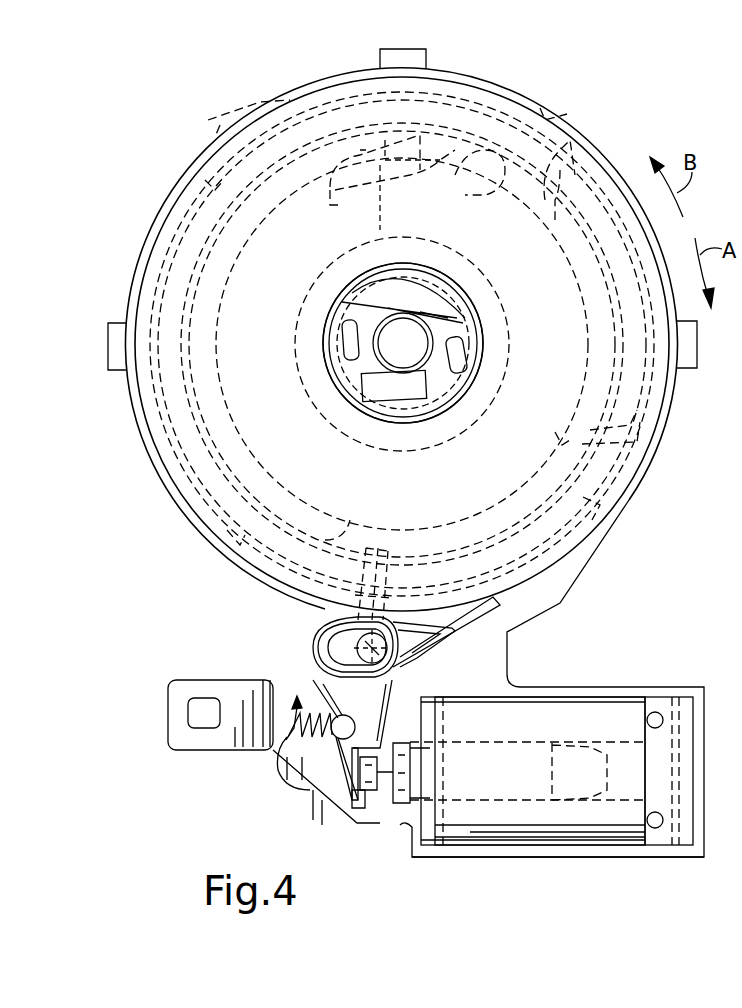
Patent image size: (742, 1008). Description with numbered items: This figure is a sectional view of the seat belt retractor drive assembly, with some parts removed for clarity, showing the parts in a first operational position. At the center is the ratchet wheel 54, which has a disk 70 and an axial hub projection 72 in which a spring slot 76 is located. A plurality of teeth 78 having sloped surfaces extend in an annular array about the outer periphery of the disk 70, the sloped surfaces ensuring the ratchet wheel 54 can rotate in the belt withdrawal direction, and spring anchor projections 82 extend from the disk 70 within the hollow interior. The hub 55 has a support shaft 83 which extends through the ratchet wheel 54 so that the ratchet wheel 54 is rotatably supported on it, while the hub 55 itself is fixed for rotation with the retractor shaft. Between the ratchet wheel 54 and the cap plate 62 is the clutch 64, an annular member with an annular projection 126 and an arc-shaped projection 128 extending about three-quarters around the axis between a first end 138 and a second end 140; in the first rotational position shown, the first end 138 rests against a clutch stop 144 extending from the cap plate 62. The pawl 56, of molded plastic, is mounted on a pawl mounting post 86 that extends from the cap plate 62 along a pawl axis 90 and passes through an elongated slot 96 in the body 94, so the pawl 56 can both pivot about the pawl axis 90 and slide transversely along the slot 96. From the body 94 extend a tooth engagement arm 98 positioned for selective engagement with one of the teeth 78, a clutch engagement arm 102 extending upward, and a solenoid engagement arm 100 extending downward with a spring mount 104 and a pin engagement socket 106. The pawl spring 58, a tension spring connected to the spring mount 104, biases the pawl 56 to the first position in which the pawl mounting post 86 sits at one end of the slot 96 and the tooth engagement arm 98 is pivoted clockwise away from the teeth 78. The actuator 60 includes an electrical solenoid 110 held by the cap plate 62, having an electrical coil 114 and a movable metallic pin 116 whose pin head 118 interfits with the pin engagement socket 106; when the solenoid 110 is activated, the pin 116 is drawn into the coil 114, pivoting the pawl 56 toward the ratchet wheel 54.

The ratchet wheel 54 is at (620, 508).
The disk 70 is at (653, 397).
The clutch 64 is at (600, 228).
The teeth 78 is at (195, 190).
The arc-shaped projection 128 is at (608, 322).
The first end 138 is at (578, 415).
The annular projection 126 is at (500, 475).
The clutch stop 144 is at (595, 440).
The second end 140 is at (348, 542).
The clutch engagement arm 102 is at (392, 556).
The spring anchor projections 82 is at (445, 176).
The spring slot 76 is at (398, 300).
The axial hub projection 72 is at (440, 412).
The support shaft 83 is at (408, 346).
The hub 55 is at (378, 355).
The body 94 is at (318, 660).
The elongated slot 96 is at (343, 645).
The pawl axis 90 is at (333, 615).
The tooth engagement arm 98 is at (490, 603).
The pawl mounting post 86 is at (393, 668).
The pawl 56 is at (480, 652).
The electrical solenoid 110 is at (618, 715).
The actuator 60 is at (578, 865).
The electrical coil 114 is at (497, 826).
The solenoid engagement arm 100 is at (405, 710).
The movable metallic pin 116 is at (395, 808).
The pin engagement socket 106 is at (360, 812).
The pin head 118 is at (348, 785).
The spring mount 104 is at (310, 790).
The cap plate 62 is at (228, 680).
The pawl spring 58 is at (277, 752).